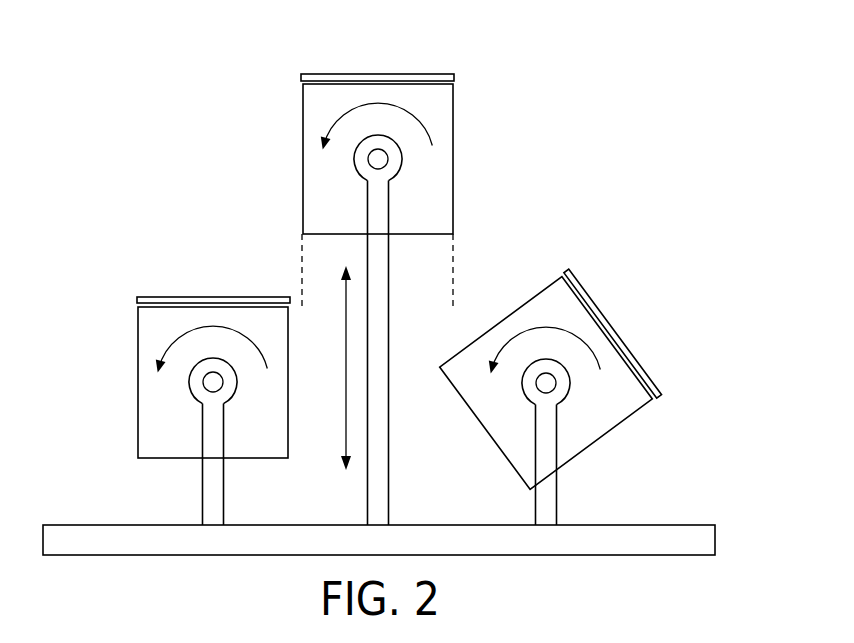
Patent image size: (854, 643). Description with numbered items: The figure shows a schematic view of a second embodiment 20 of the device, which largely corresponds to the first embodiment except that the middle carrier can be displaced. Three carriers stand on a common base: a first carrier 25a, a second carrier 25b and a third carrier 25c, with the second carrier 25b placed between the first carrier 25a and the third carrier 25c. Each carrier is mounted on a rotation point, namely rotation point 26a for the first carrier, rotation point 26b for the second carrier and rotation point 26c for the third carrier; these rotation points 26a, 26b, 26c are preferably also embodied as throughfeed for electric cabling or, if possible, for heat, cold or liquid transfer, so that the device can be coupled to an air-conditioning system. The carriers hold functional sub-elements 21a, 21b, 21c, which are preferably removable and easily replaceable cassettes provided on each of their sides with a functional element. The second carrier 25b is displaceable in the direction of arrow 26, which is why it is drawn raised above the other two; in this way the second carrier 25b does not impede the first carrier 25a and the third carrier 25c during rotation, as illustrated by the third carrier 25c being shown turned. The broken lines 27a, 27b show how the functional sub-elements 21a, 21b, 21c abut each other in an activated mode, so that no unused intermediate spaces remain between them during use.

The second embodiment 20 is at (645, 170).
The functional sub-element 21a is at (176, 297).
The functional sub-element 21b is at (378, 74).
The functional sub-element 21c is at (614, 331).
The first carrier 25a is at (137, 410).
The second carrier 25b is at (303, 186).
The third carrier 25c is at (492, 440).
The arrow 26 is at (346, 368).
The rotation point 26a is at (214, 383).
The rotation point 26b is at (379, 160).
The rotation point 26c is at (547, 384).
The broken line 27a is at (302, 268).
The broken line 27b is at (454, 268).